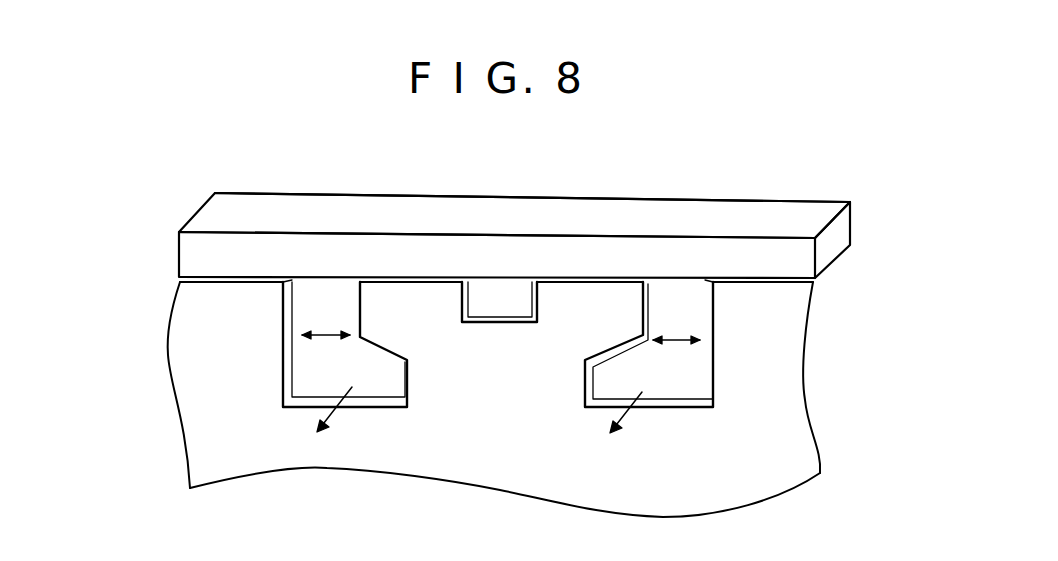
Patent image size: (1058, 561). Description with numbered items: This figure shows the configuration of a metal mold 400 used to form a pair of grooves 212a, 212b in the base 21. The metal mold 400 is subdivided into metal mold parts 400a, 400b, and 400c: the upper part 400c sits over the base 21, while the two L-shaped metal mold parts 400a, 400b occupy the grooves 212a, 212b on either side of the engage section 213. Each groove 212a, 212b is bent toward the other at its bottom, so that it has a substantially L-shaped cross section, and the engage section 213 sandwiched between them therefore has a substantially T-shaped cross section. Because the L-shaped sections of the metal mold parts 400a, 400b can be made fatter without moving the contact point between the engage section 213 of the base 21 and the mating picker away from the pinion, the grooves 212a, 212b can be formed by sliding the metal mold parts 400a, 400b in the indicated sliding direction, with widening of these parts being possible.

The metal mold 400 is at (908, 188).
The metal mold part 400a is at (313, 360).
The metal mold part 400b is at (690, 372).
The metal mold part 400c is at (580, 217).
The groove 212a is at (283, 390).
The groove 212b is at (713, 387).
The engage section 213 is at (497, 337).
The base 21 is at (557, 457).